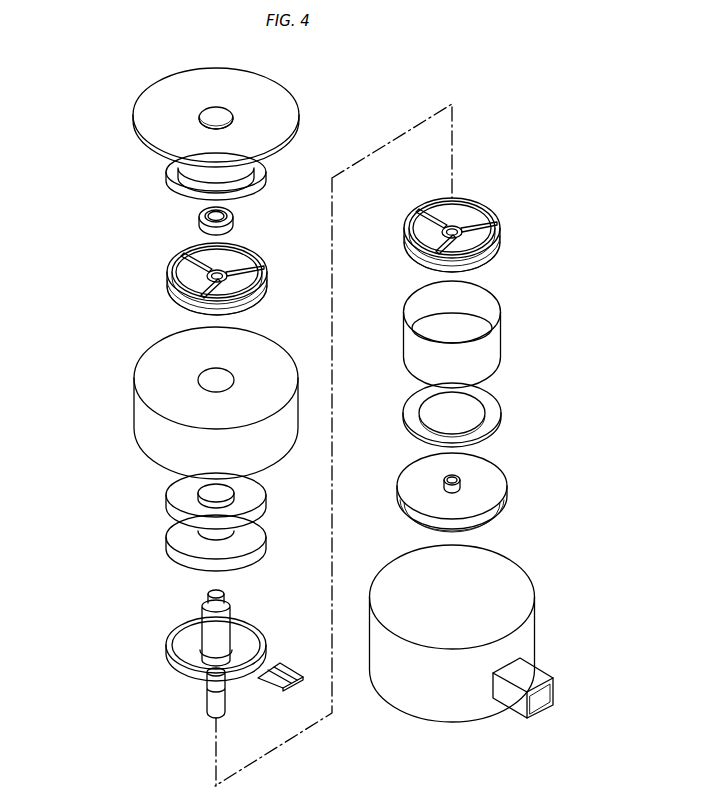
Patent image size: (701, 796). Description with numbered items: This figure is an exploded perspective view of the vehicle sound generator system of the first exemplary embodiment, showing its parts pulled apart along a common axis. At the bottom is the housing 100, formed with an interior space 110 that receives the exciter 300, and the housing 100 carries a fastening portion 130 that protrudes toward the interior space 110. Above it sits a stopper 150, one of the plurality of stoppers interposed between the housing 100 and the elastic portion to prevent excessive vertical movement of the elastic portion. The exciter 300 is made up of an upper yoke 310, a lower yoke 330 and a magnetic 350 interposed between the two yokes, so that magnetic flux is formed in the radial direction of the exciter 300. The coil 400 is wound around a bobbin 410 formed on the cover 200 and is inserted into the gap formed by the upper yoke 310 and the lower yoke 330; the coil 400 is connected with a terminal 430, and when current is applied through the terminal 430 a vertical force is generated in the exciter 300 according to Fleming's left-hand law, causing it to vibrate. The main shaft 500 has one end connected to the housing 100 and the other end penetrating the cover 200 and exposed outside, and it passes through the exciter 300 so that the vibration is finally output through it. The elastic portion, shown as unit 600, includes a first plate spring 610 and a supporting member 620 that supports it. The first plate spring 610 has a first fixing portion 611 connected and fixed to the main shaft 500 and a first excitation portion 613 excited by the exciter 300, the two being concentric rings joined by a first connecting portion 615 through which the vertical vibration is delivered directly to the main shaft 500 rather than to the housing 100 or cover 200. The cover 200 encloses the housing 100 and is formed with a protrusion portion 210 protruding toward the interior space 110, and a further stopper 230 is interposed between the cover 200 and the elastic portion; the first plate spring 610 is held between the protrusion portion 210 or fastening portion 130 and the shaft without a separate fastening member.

The housing 100 is at (478, 617).
The interior space 110 is at (453, 577).
The fastening portion 130 is at (460, 478).
The stopper 150 is at (493, 412).
The cover 200 is at (147, 111).
The protrusion portion 210 is at (201, 220).
The stopper 230 is at (175, 177).
The exciter 300 is at (159, 449).
The upper yoke 310 is at (147, 421).
The lower yoke 330 is at (171, 543).
The magnetic 350 is at (185, 494).
The coil 400 is at (172, 655).
The bobbin 410 is at (495, 338).
The terminal 430 is at (287, 668).
The main shaft 500 is at (193, 640).
The rotor unit 600 is at (104, 250).
The first plate spring 610 is at (174, 268).
The first fixing portion 611 is at (465, 230).
The first excitation portion 613 is at (497, 248).
The first connecting portion 615 is at (556, 269).
The supporting member 620 is at (172, 300).